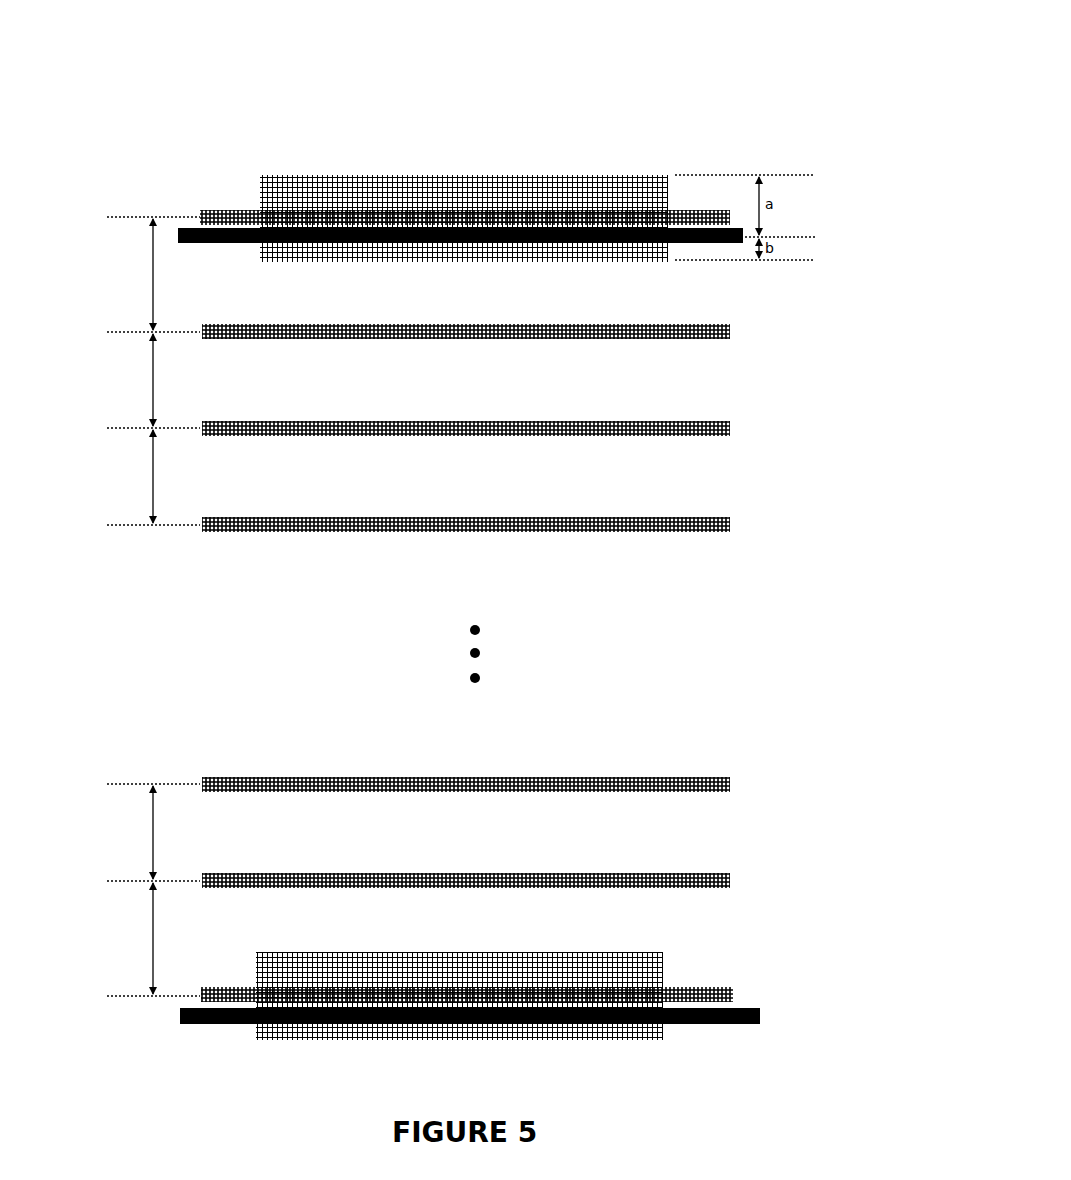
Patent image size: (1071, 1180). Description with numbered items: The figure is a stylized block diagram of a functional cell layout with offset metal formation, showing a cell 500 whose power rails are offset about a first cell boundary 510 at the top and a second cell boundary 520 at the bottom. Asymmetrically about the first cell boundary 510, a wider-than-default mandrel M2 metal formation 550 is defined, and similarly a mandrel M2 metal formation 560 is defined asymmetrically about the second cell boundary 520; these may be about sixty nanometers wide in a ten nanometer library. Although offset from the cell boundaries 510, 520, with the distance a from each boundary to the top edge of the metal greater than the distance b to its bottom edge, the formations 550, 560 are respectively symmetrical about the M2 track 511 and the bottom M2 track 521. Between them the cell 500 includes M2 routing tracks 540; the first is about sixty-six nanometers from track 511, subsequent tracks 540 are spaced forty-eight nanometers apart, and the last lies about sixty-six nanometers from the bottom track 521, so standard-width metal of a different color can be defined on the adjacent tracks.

The cell 500 is at (250, 30).
The 1st cell boundary 510 is at (190, 227).
The M2 track 511 is at (217, 218).
The 2nd cell boundary 520 is at (200, 1025).
The M2 track 521 is at (192, 997).
The M2 routing tracks 540 is at (417, 780).
The mandrel M2 metal formation 550 is at (567, 188).
The mandrel M2 metal formation 560 is at (622, 958).